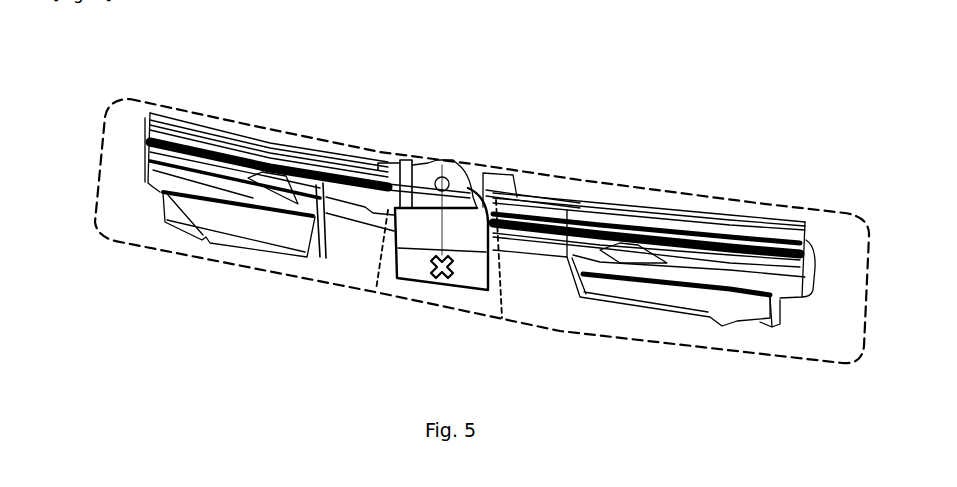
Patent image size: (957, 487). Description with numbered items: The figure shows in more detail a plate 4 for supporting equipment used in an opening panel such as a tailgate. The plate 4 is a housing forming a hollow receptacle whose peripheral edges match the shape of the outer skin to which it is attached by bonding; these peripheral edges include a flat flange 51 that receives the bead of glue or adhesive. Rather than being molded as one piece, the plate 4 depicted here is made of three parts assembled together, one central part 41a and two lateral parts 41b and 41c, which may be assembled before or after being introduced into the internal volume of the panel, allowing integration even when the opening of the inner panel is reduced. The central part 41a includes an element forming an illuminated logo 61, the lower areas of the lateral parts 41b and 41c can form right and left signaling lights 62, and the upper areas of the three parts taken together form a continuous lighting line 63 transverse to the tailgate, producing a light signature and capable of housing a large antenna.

The plate 4 is at (430, 322).
The central part 41a is at (444, 160).
The lateral part 41b is at (247, 137).
The lateral part 41c is at (643, 209).
The flat flange 51 is at (766, 300).
The illuminated logo 61 is at (445, 272).
The signaling lights 62 is at (730, 418).
The continuous lighting line 63 is at (622, 220).